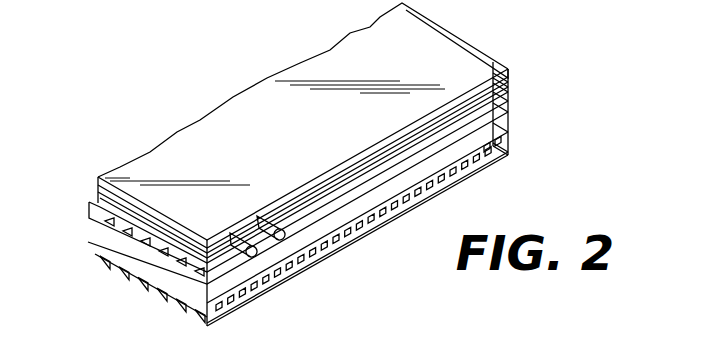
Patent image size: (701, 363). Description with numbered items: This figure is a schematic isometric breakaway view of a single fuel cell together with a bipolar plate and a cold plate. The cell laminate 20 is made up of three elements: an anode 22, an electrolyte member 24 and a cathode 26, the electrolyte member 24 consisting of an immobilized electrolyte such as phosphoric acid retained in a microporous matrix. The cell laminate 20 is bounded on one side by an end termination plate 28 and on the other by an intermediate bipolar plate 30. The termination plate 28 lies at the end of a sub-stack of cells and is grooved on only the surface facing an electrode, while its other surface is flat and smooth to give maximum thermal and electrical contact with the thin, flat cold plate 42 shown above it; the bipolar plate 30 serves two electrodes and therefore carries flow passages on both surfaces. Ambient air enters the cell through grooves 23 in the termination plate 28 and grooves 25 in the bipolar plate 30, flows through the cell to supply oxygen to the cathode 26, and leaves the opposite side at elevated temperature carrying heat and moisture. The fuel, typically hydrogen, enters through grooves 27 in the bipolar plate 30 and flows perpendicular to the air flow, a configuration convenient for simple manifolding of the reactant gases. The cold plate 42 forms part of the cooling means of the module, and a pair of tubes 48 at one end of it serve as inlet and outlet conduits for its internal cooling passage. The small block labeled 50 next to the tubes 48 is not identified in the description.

The cell laminate 20 is at (212, 298).
The anode 22 is at (487, 153).
The grooves 23 is at (105, 223).
The electrolyte member 24 is at (490, 147).
The grooves 25 is at (148, 294).
The cathode 26 is at (483, 117).
The grooves 27 is at (266, 284).
The end termination plate 28 is at (89, 203).
The intermediate bipolar plate 30 is at (88, 243).
The cold plate 42 is at (500, 84).
The tubes 48 is at (230, 235).
The block 50 is at (259, 216).